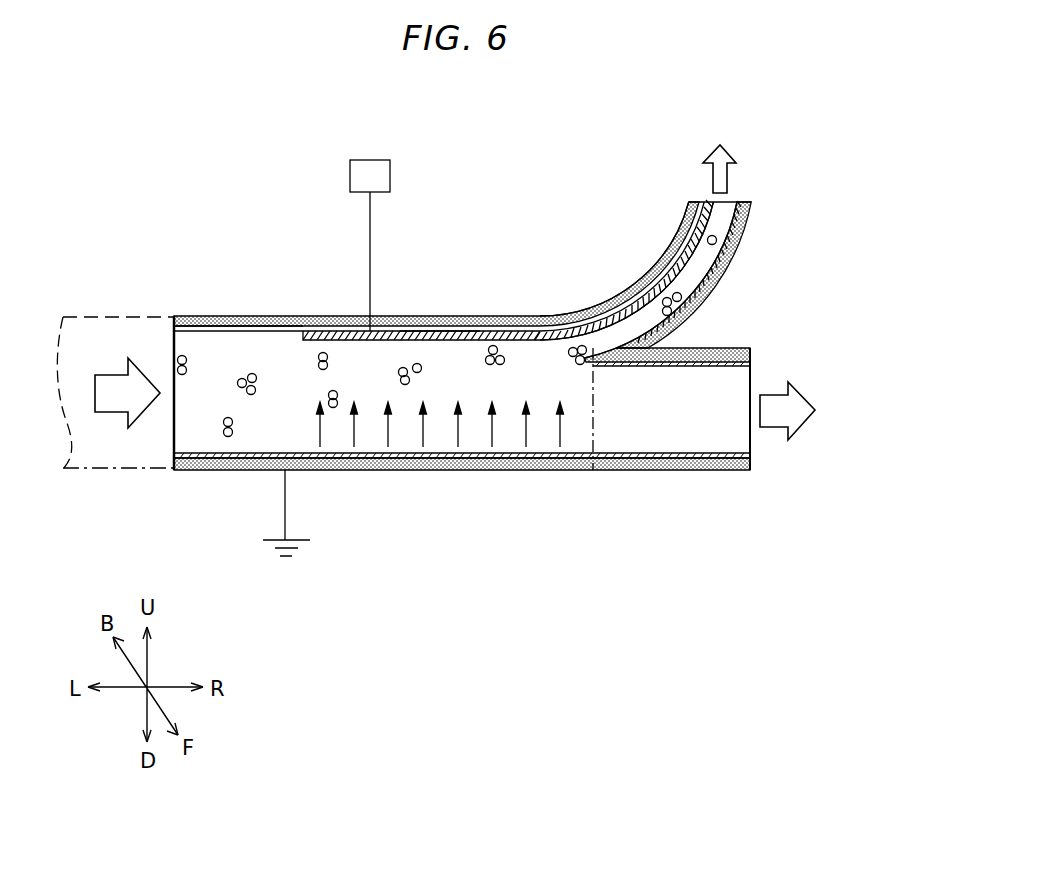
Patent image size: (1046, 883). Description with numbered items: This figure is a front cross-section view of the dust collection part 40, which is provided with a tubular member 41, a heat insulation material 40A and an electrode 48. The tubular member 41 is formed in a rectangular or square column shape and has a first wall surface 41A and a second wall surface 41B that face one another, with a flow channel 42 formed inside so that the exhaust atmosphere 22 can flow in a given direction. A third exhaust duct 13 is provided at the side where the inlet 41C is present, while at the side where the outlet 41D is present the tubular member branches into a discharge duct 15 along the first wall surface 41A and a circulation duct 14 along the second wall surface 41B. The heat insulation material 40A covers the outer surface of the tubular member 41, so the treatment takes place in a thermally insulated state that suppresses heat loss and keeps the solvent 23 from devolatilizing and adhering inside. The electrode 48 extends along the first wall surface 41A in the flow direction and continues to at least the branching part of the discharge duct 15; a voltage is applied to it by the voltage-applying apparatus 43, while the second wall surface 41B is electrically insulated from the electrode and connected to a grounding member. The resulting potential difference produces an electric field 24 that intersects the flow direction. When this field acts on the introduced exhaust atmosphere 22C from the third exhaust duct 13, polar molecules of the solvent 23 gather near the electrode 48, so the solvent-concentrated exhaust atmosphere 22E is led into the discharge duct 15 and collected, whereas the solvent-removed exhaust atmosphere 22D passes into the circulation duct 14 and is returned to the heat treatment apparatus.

The third exhaust duct 13 is at (92, 313).
The exhaust atmosphere 22 is at (459, 307).
The introduced exhaust atmosphere 22C is at (115, 372).
The solvent-removed exhaust atmosphere 22D is at (775, 392).
The solvent-concentrated exhaust atmosphere 22E is at (707, 180).
The circulation duct 14 is at (733, 348).
The discharge duct 15 is at (673, 250).
The solvent 23 is at (492, 347).
The electric field 24 is at (421, 430).
The dust collection part 40 is at (485, 358).
The heat insulation material 40A is at (233, 315).
The tubular member 41 is at (335, 317).
The first wall surface 41A is at (285, 318).
The second wall surface 41B is at (483, 457).
The inlet 41C is at (187, 348).
The outlet 41D is at (540, 347).
The flow channel 42 is at (193, 442).
The voltage-applying apparatus 43 is at (392, 176).
The electrode 48 is at (442, 330).